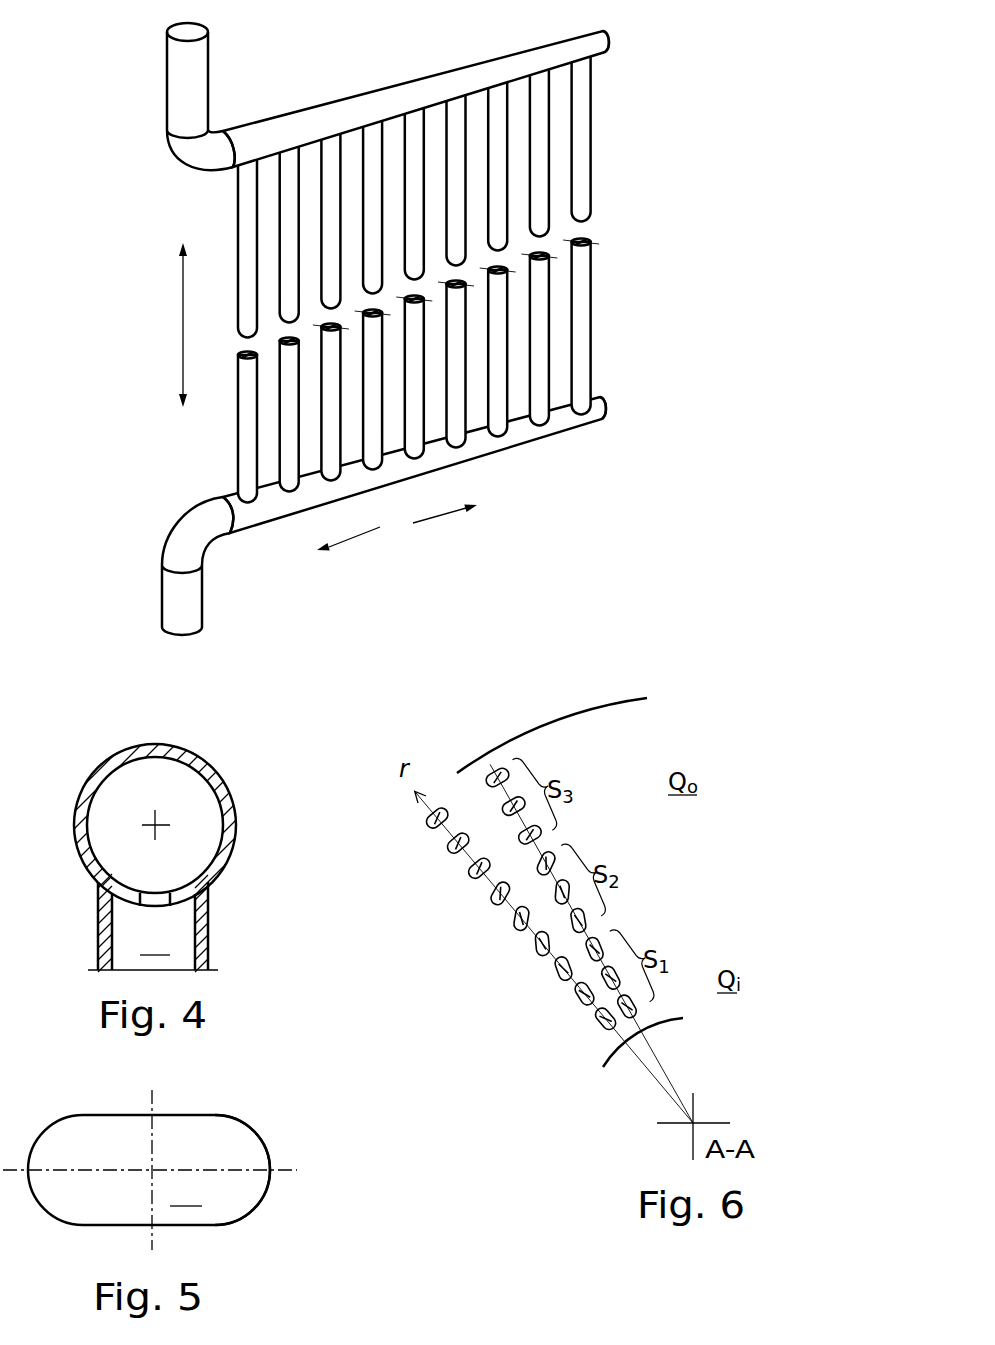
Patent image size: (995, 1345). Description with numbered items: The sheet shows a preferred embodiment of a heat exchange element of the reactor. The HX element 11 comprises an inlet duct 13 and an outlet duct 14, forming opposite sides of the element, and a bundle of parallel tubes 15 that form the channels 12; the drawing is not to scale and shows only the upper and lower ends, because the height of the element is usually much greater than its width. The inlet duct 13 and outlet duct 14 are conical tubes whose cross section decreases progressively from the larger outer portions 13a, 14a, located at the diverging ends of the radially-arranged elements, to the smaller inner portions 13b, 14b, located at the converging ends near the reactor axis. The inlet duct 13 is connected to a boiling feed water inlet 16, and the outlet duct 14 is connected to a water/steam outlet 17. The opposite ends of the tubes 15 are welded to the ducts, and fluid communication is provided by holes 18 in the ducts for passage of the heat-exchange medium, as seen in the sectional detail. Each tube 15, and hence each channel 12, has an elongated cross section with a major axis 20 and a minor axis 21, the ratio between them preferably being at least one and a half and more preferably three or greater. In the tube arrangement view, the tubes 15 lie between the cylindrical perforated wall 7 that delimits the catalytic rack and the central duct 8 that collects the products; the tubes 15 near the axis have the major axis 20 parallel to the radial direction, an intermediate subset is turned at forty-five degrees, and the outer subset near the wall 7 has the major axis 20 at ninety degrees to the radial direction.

In FIG. 6, the cylindrical perforated wall 7 is at (580, 713).
In FIG. 6, the central duct 8 is at (610, 1055).
In FIG. 3, the HX element 11 is at (738, 214).
In FIG. 3, the channel 12 is at (590, 238).
In FIG. 4, the channel 12 is at (155, 942).
In FIG. 5, the channel 12 is at (186, 1194).
In FIG. 6, the channel 12 is at (582, 997).
In FIG. 3, the inlet duct 13 is at (538, 438).
In FIG. 3, the outer portion of inlet duct 13a is at (155, 529).
In FIG. 3, the inner portion of inlet duct 13b is at (601, 447).
In FIG. 3, the outlet duct 14 is at (430, 87).
In FIG. 4, the outlet duct 14 is at (232, 802).
In FIG. 3, the outer portion of outlet duct 14a is at (146, 133).
In FIG. 3, the inner portion of outlet duct 14b is at (606, 71).
In FIG. 3, the tube 15 is at (593, 187).
In FIG. 4, the tube 15 is at (203, 930).
In FIG. 5, the tube 15 is at (70, 1227).
In FIG. 6, the tube 15 is at (450, 847).
In FIG. 3, the boiling feed water inlet 16 is at (173, 593).
In FIG. 3, the water/steam outlet 17 is at (180, 90).
In FIG. 4, the hole 18 is at (153, 897).
In FIG. 3, the major axis 20 is at (593, 240).
In FIG. 5, the major axis 20 is at (282, 1170).
In FIG. 5, the minor axis 21 is at (153, 1095).